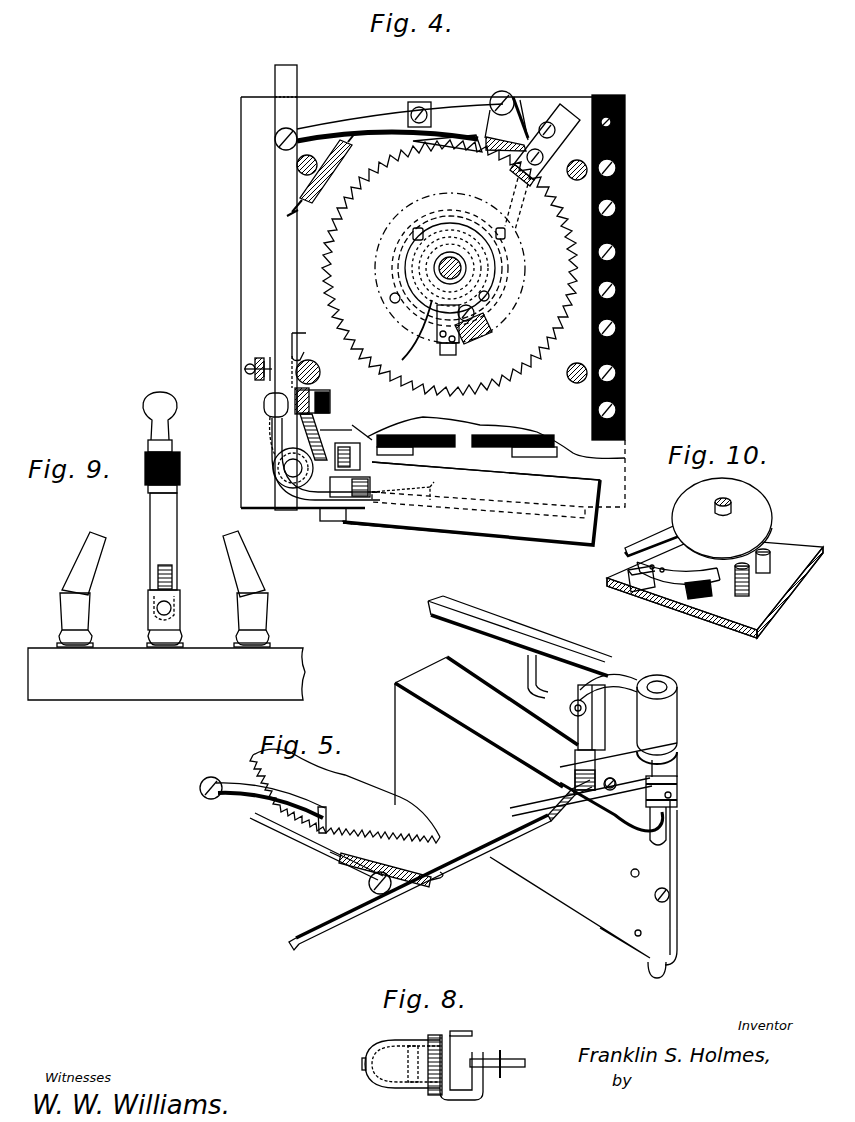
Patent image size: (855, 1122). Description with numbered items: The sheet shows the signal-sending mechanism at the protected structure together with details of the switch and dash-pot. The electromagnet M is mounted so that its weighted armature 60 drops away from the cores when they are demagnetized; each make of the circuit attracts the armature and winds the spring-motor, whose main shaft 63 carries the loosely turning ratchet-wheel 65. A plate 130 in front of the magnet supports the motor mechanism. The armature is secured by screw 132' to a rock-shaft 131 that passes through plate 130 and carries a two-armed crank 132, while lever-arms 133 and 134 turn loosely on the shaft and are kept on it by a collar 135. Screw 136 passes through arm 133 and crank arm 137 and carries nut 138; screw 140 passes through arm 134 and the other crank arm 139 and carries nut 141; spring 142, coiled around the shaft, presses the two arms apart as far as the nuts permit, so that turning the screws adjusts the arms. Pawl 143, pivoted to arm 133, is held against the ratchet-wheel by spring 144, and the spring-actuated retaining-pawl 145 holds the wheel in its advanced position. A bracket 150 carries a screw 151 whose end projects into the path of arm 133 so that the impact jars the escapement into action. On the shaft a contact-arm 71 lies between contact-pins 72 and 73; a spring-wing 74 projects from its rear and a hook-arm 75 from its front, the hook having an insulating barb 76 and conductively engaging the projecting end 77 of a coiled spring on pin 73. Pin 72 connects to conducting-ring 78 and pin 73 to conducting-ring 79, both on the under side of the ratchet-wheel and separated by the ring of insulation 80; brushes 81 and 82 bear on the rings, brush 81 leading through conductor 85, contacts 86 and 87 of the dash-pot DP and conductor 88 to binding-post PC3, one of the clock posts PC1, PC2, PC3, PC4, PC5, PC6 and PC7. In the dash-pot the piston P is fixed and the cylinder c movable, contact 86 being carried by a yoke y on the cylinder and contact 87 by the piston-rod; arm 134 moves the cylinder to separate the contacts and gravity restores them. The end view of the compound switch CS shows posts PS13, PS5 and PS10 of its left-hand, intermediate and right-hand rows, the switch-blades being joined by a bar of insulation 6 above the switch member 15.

In FIG. 4, the armature 60 is at (490, 527).
In FIG. 4, the main shaft 63 is at (458, 270).
In FIG. 10, the main shaft 63 is at (733, 507).
In FIG. 4, the ratchet-wheel 65 is at (390, 300).
In FIG. 10, the ratchet-wheel 65 is at (766, 614).
In FIG. 5, the ratchet-wheel 65 is at (361, 793).
In FIG. 4, the contact-arm 71 is at (447, 356).
In FIG. 10, the contact-arm 71 is at (640, 586).
In FIG. 4, the contact-pin 72 is at (394, 306).
In FIG. 4, the contact-pin 73 is at (476, 313).
In FIG. 10, the contact-pin 73 is at (764, 573).
In FIG. 4, the spring-wing 74 is at (418, 340).
In FIG. 10, the spring-wing 74 is at (640, 547).
In FIG. 4, the hook-arm 75 is at (490, 340).
In FIG. 10, the hook-arm 75 is at (680, 583).
In FIG. 4, the barb of insulation 76 is at (493, 338).
In FIG. 10, the barb of insulation 76 is at (703, 599).
In FIG. 4, the projecting end of coiled spring 77 is at (470, 348).
In FIG. 10, the projecting end of coiled spring 77 is at (742, 597).
In FIG. 4, the conducting-ring 78 is at (458, 206).
In FIG. 4, the conducting-ring 79 is at (492, 222).
In FIG. 4, the ring of insulation 80 is at (398, 256).
In FIG. 4, the brush 81 is at (422, 125).
In FIG. 4, the brush 82 is at (551, 110).
In FIG. 8, the conductor 85 is at (500, 1050).
In FIG. 8, the contact 86 is at (478, 1056).
In FIG. 8, the contact 87 is at (466, 1050).
In FIG. 8, the conductor 88 is at (472, 1048).
In FIG. 4, the plate 130 is at (252, 455).
In FIG. 4, the rock-shaft 131 is at (288, 470).
In FIG. 5, the rock-shaft 131 is at (657, 970).
In FIG. 4, the two-armed crank 132 is at (349, 461).
In FIG. 5, the two-armed crank 132 is at (681, 810).
In FIG. 5, the screw 132' is at (688, 892).
In FIG. 4, the lever-arm 133 is at (275, 262).
In FIG. 5, the lever-arm 133 is at (458, 872).
In FIG. 5, the lever-arm 134 is at (484, 636).
In FIG. 5, the collar 135 is at (695, 706).
In FIG. 4, the screw 136 is at (264, 403).
In FIG. 5, the screw 136 is at (640, 802).
In FIG. 4, the crank arm 137 is at (320, 386).
In FIG. 5, the crank arm 137 is at (575, 758).
In FIG. 4, the nut 138 is at (335, 440).
In FIG. 5, the nut 138 is at (556, 791).
In FIG. 4, the crank arm 139 is at (486, 472).
In FIG. 5, the crank arm 139 is at (578, 715).
In FIG. 4, the screw 140 is at (348, 514).
In FIG. 5, the screw 140 is at (616, 678).
In FIG. 4, the nut 141 is at (372, 442).
In FIG. 5, the nut 141 is at (570, 707).
In FIG. 4, the spring 142 is at (290, 348).
In FIG. 5, the spring 142 is at (655, 836).
In FIG. 4, the pawl 143 is at (389, 127).
In FIG. 5, the pawl 143 is at (312, 850).
In FIG. 4, the spring 144 is at (321, 178).
In FIG. 5, the spring 144 is at (405, 868).
In FIG. 4, the retaining-pawl 145 is at (495, 104).
In FIG. 5, the retaining-pawl 145 is at (262, 824).
In FIG. 4, the bracket 150 is at (262, 378).
In FIG. 4, the screw 151 is at (246, 368).
In FIG. 9, the bar of insulation 6 is at (147, 472).
In FIG. 9, the lamp socket 15 is at (173, 567).
In FIG. 9, the compound switch CS is at (151, 407).
In FIG. 9, the switch-post PS5 is at (165, 640).
In FIG. 9, the switch-post PS10 is at (261, 589).
In FIG. 9, the switch-post PS13 is at (65, 589).
In FIG. 4, the binding-post PC1 is at (626, 168).
In FIG. 4, the binding-post PC2 is at (626, 208).
In FIG. 4, the binding-post PC3 is at (626, 252).
In FIG. 4, the binding-post PC4 is at (626, 290).
In FIG. 4, the binding-post PC5 is at (626, 328).
In FIG. 4, the binding-post PC6 is at (626, 373).
In FIG. 4, the binding-post PC7 is at (626, 410).
In FIG. 4, the electromagnet M is at (482, 430).
In FIG. 8, the piston P is at (408, 1066).
In FIG. 8, the dash-pot DP is at (401, 1077).
In FIG. 8, the cylinder c is at (368, 1082).
In FIG. 8, the yoke y is at (486, 1100).